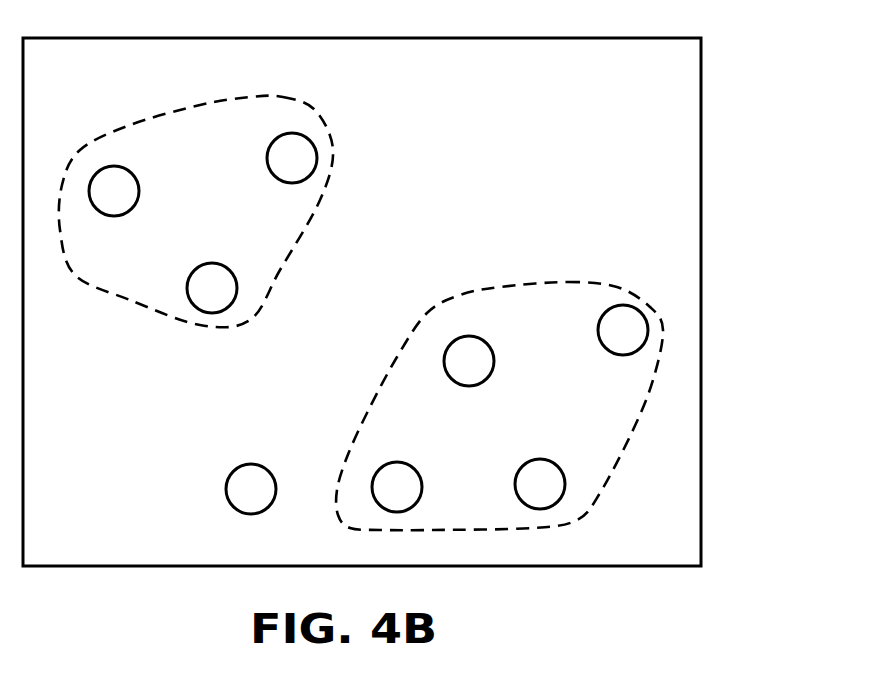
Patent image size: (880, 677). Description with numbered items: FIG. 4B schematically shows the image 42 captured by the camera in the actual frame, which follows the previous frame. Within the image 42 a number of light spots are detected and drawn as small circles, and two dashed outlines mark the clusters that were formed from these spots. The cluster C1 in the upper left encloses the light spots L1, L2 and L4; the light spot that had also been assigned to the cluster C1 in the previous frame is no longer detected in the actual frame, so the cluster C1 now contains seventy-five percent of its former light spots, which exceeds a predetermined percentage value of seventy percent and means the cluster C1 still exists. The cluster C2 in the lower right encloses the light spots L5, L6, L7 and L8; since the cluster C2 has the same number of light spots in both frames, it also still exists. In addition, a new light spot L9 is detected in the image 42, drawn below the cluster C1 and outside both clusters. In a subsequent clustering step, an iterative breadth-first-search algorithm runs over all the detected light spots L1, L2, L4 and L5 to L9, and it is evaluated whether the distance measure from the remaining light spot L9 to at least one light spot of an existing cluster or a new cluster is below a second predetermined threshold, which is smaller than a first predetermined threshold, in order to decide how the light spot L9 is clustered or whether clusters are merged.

The image 42 is at (663, 38).
The cluster C1 is at (307, 106).
The cluster C2 is at (580, 283).
The light spot L1 is at (140, 191).
The light spot L2 is at (273, 180).
The light spot L4 is at (192, 279).
The light spot L5 is at (491, 367).
The light spot L6 is at (602, 343).
The light spot L7 is at (422, 485).
The light spot L8 is at (518, 472).
The light spot L9 is at (229, 495).